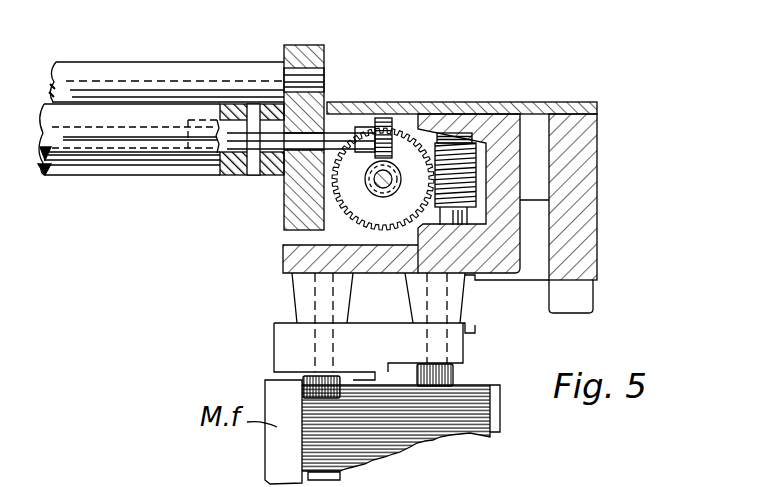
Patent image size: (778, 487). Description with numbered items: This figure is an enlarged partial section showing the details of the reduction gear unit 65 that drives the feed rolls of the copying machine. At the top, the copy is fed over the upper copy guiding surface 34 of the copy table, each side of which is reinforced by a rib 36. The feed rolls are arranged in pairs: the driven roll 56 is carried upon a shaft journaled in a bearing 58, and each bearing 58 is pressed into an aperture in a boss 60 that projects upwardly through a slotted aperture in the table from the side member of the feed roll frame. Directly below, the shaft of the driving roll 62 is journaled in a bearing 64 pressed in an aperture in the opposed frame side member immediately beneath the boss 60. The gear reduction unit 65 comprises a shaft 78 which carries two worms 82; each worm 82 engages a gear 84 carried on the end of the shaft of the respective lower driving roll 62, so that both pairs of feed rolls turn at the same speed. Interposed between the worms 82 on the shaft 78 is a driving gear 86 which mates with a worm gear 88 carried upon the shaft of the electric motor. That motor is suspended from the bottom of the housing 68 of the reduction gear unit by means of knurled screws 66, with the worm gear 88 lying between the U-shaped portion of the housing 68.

The upper copy guiding surface 34 is at (572, 102).
The rib 36 is at (583, 180).
The driven roll 56 is at (158, 70).
The bearing 58 is at (325, 70).
The boss 60 is at (290, 50).
The driving roll 62 is at (112, 163).
The bearing 64 is at (298, 160).
The reduction gear unit 65 is at (477, 97).
The knurled screw 66 is at (303, 388).
The housing 68 is at (283, 253).
The shaft 78 is at (387, 167).
The worm 82 is at (383, 184).
The gear 84 is at (383, 120).
The driving gear 86 is at (377, 218).
The worm gear 88 is at (487, 140).